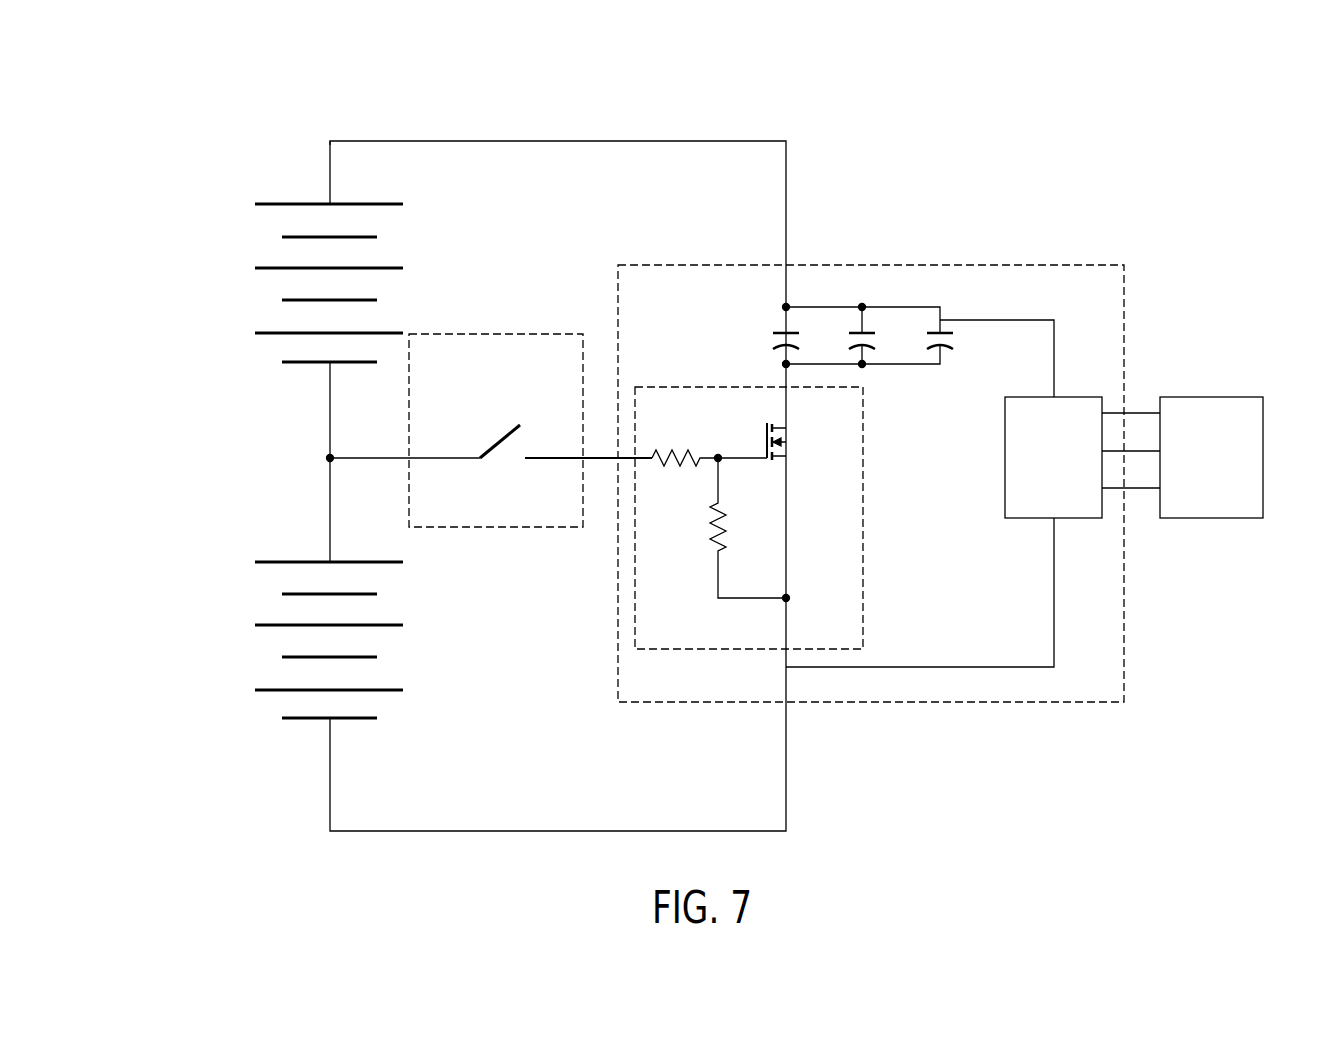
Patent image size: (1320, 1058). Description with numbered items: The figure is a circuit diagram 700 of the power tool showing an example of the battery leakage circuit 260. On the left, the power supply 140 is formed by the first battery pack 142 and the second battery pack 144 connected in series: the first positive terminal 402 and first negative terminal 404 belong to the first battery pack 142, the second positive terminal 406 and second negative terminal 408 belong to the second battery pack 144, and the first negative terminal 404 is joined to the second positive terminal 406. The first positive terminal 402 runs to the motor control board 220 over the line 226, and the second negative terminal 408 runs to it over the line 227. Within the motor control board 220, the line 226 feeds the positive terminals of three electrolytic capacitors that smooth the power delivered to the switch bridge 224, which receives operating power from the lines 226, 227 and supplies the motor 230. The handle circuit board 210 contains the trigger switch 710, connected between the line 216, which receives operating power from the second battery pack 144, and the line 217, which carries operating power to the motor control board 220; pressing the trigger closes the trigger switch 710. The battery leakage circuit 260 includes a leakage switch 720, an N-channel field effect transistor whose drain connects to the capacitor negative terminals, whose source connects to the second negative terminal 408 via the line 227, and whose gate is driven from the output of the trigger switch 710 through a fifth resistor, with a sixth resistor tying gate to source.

The circuit diagram 700 is at (268, 125).
The power supply 140 is at (271, 457).
The first battery pack 142 is at (283, 237).
The second battery pack 144 is at (283, 594).
The first positive terminal 402 is at (326, 203).
The first negative terminal 404 is at (326, 363).
The second positive terminal 406 is at (326, 561).
The second negative terminal 408 is at (326, 719).
The handle circuit board 210 is at (530, 397).
The trigger switch 710 is at (517, 427).
The line 216 is at (360, 459).
The line 217 is at (600, 460).
The motor control board 220 is at (1124, 607).
The battery leakage circuit 260 is at (749, 484).
The leakage switch 720 is at (790, 440).
The switch bridge 224 is at (1069, 518).
The line 226 is at (681, 141).
The line 227 is at (786, 803).
The motor 230 is at (1213, 518).